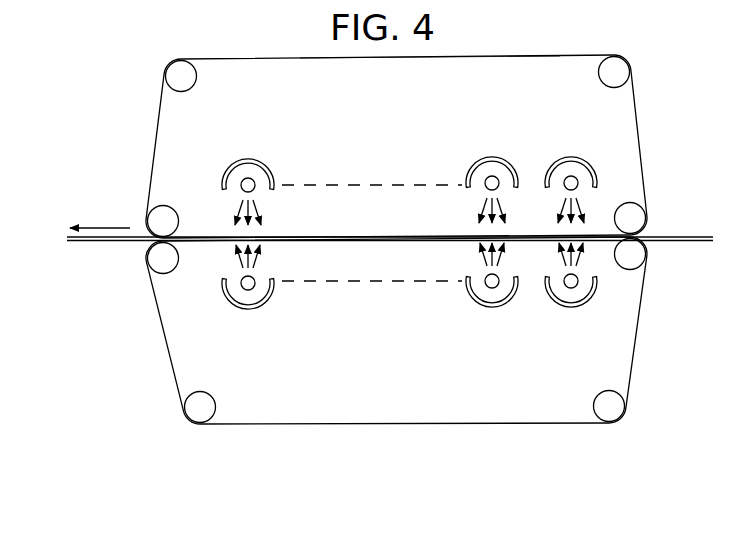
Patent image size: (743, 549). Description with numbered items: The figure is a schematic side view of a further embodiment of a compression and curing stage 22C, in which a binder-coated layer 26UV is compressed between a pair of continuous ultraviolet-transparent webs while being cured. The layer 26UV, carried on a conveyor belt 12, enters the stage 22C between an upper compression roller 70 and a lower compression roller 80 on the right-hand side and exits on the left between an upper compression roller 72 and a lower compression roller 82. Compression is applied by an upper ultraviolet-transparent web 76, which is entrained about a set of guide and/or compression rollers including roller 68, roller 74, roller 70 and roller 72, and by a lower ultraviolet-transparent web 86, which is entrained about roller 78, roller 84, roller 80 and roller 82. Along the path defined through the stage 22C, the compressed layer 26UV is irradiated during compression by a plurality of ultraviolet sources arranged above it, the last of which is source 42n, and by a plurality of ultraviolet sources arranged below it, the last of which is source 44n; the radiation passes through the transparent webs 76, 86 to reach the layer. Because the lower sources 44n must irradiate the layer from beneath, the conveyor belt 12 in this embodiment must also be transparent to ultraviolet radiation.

The conveyor belt 12 is at (700, 238).
The compression and curing stage 22C is at (622, 53).
The binder-coated layer 26UV is at (690, 222).
The ultraviolet source 42n is at (251, 174).
The ultraviolet source 44n is at (265, 305).
The guide roller 68 is at (612, 70).
The compression roller 70 is at (635, 212).
The compression roller 72 is at (160, 222).
The guide roller 74 is at (173, 70).
The ultraviolet-transparent web 76 is at (462, 57).
The guide roller 78 is at (620, 405).
The compression roller 80 is at (640, 253).
The compression roller 82 is at (155, 258).
The guide roller 84 is at (190, 408).
The ultraviolet-transparent web 86 is at (425, 426).